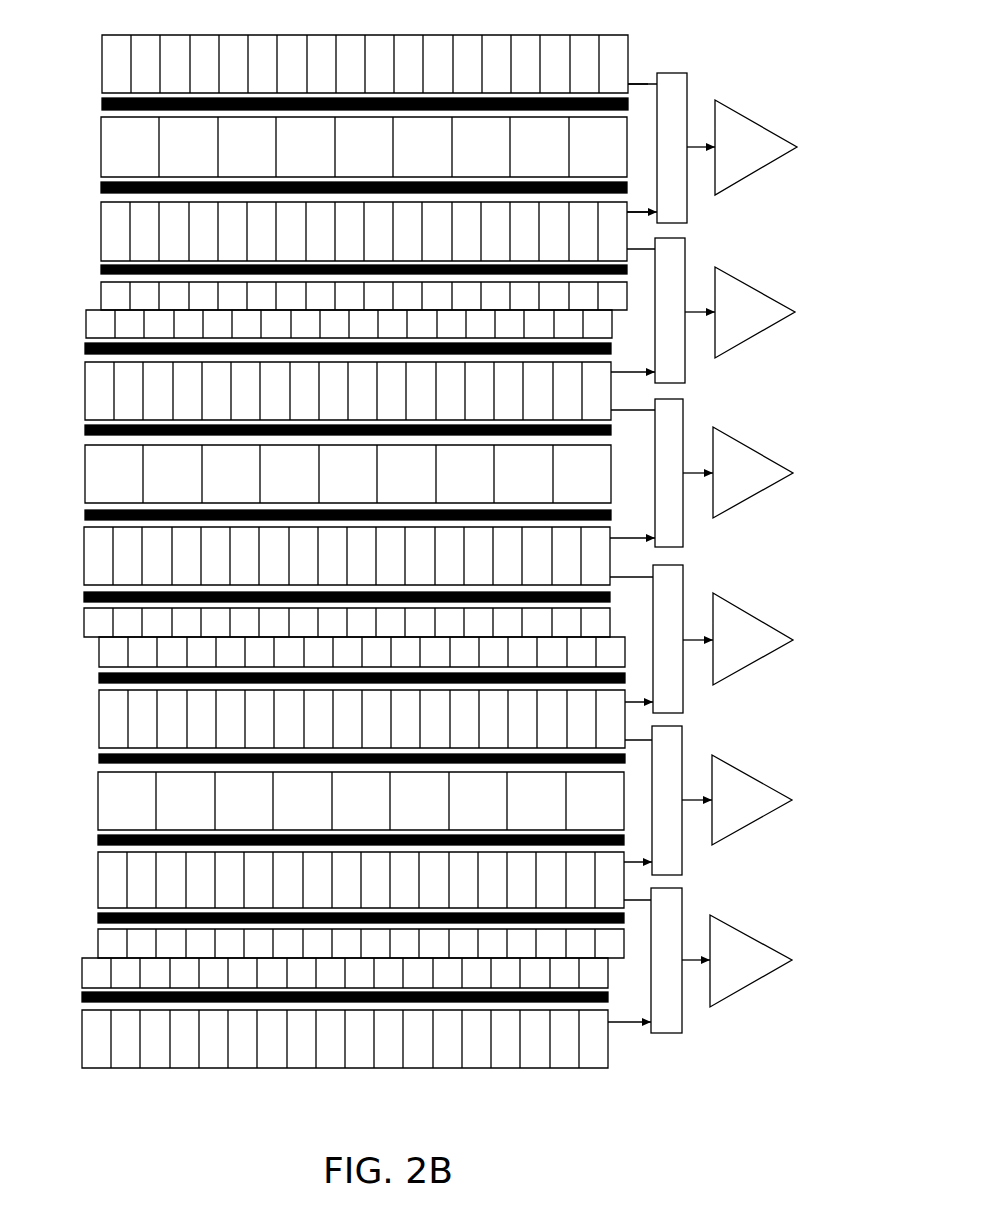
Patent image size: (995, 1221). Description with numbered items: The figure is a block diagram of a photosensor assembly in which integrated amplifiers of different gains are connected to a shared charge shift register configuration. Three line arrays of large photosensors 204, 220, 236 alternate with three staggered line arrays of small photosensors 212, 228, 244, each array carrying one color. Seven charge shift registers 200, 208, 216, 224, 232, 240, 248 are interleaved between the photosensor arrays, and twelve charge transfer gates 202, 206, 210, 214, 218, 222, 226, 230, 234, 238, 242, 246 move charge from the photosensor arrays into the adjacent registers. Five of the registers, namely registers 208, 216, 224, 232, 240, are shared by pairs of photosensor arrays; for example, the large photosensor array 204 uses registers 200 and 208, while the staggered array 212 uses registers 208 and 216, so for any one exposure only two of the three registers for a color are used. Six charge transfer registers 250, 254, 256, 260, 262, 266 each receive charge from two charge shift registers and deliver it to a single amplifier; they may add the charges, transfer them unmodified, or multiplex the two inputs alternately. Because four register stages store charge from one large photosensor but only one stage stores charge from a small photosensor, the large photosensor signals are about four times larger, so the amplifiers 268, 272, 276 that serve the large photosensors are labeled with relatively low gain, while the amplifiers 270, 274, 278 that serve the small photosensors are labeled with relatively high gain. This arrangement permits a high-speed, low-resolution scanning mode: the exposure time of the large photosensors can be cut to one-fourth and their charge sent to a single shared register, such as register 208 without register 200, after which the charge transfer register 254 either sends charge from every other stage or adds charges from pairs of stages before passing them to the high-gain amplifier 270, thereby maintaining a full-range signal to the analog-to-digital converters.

The charge shift register 200 is at (102, 40).
The charge transfer gate 202 is at (102, 98).
The line array of large photosensors 204 is at (101, 125).
The charge transfer gate 206 is at (101, 182).
The charge shift register 208 is at (101, 210).
The charge transfer gate 210 is at (101, 265).
The staggered line array of small photosensors 212 is at (101, 290).
The charge transfer gate 214 is at (85, 343).
The charge shift register 216 is at (85, 370).
The charge transfer gate 218 is at (85, 425).
The line array of large photosensors 220 is at (85, 453).
The charge transfer gate 222 is at (85, 510).
The charge shift register 224 is at (84, 535).
The charge transfer gate 226 is at (84, 592).
The staggered line array of small photosensors 228 is at (84, 616).
The charge transfer gate 230 is at (99, 673).
The charge shift register 232 is at (99, 698).
The charge transfer gate 234 is at (99, 754).
The line array of large photosensors 236 is at (98, 780).
The charge transfer gate 238 is at (98, 835).
The charge shift register 240 is at (98, 860).
The charge transfer gate 242 is at (98, 913).
The staggered line array of small photosensors 244 is at (98, 937).
The charge transfer gate 246 is at (82, 992).
The charge shift register 248 is at (82, 1018).
The charge transfer register 250 is at (688, 86).
The charge transfer register 254 is at (686, 251).
The charge transfer register 256 is at (684, 412).
The charge transfer register 260 is at (684, 578).
The charge transfer register 262 is at (683, 739).
The charge transfer register 266 is at (683, 901).
The amplifier 268 is at (745, 116).
The amplifier 270 is at (745, 283).
The amplifier 272 is at (743, 443).
The amplifier 274 is at (743, 609).
The amplifier 276 is at (742, 771).
The amplifier 278 is at (740, 931).